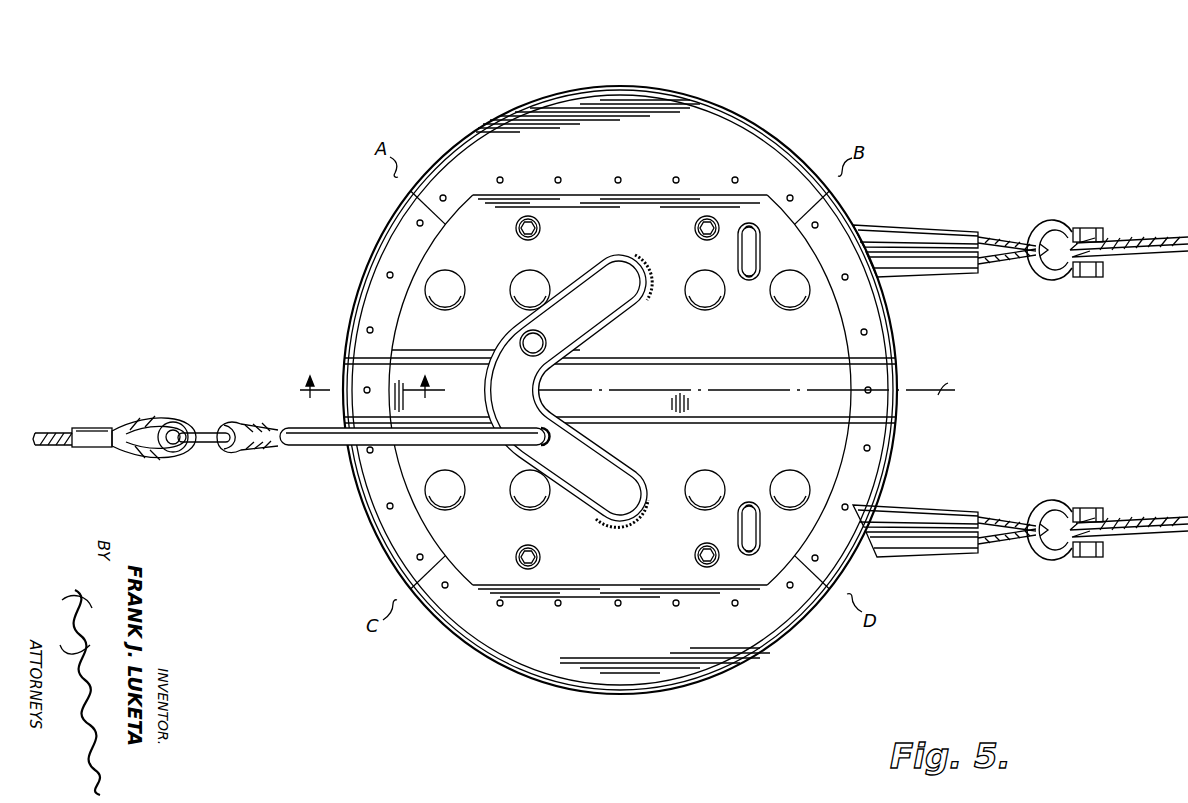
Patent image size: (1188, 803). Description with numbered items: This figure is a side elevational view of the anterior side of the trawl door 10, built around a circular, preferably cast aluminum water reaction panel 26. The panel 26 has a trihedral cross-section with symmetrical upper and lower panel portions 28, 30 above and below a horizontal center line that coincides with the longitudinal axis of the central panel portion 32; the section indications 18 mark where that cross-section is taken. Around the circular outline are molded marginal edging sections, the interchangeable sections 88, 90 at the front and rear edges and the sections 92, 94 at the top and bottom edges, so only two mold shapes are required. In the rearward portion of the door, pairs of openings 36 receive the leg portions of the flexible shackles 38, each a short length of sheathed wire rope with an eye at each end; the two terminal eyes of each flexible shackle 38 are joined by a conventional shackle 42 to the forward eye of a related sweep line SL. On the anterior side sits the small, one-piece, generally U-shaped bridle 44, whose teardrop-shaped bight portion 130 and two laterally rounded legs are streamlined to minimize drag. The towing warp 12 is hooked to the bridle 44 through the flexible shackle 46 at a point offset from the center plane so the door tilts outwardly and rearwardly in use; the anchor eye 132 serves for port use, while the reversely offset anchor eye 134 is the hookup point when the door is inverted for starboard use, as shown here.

The door 10 is at (479, 114).
The towing warp 12 is at (48, 433).
The section line 18- 18 is at (367, 394).
The water reaction panel 26 is at (453, 524).
The upper panel portion 28 is at (748, 208).
The lower panel portion 30 is at (723, 575).
The central panel portion 32 is at (830, 377).
The openings 36 is at (742, 226).
The flexible shackles 38 is at (760, 254).
The conventional shackle 42 is at (1050, 222).
The bridle 44 is at (556, 374).
The flexible shackle 46 is at (431, 457).
The marginal edging section 88 is at (366, 298).
The marginal edging section 90 is at (877, 455).
The marginal edging section 92 is at (668, 123).
The marginal edging section 94 is at (687, 655).
The bight portion 130 is at (512, 360).
The anchor eye 132 is at (528, 336).
The anchor eye 134 is at (545, 444).
The sweep lines SL is at (1152, 240).